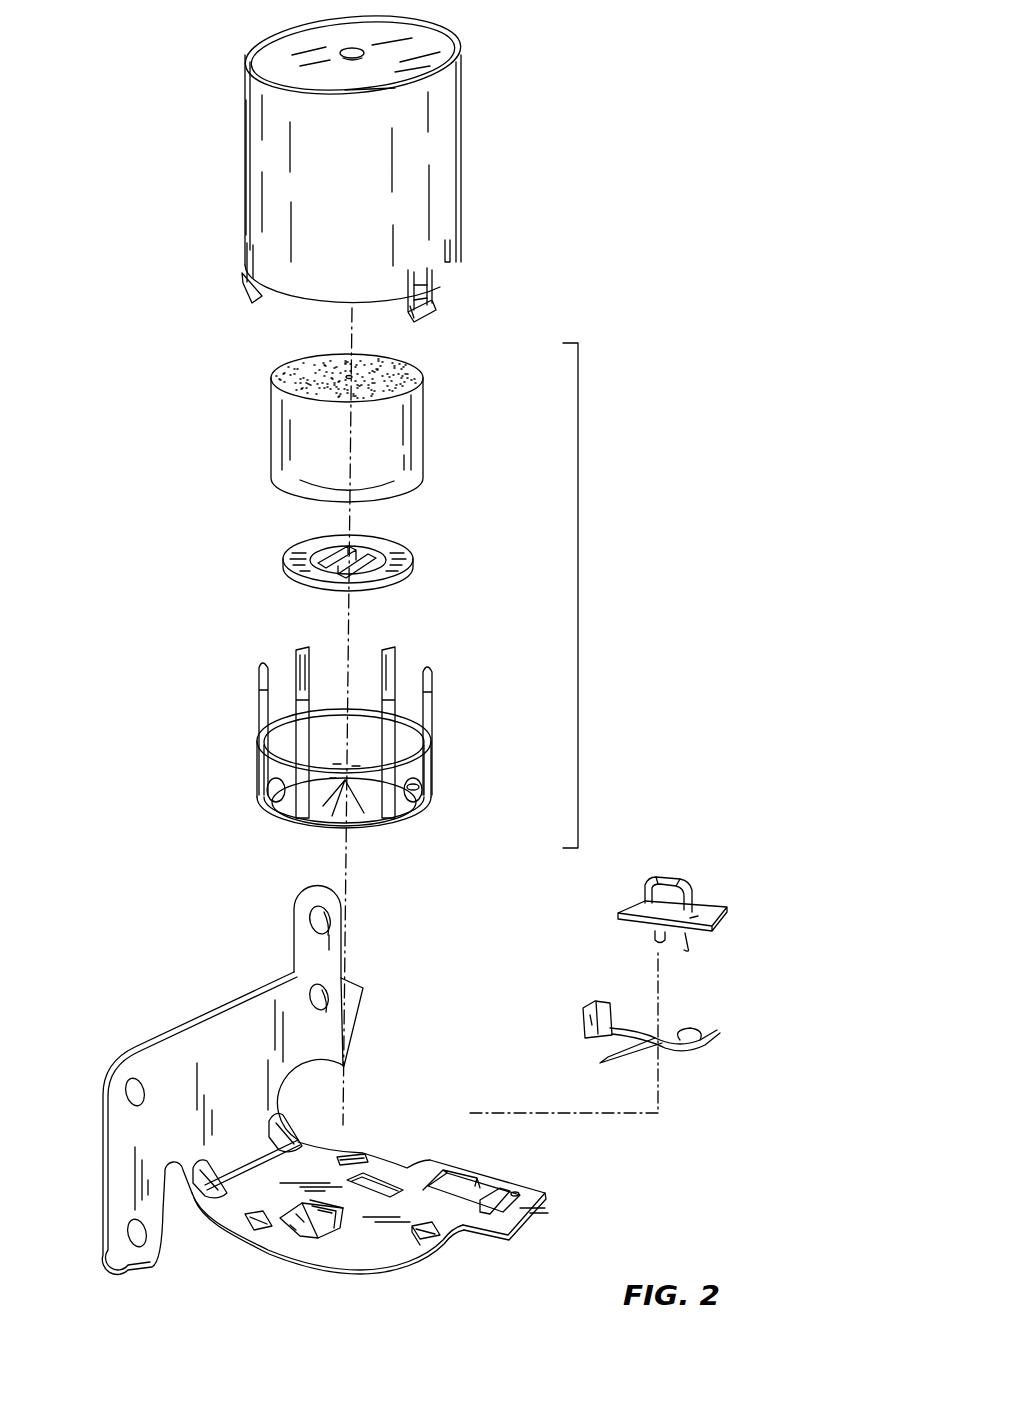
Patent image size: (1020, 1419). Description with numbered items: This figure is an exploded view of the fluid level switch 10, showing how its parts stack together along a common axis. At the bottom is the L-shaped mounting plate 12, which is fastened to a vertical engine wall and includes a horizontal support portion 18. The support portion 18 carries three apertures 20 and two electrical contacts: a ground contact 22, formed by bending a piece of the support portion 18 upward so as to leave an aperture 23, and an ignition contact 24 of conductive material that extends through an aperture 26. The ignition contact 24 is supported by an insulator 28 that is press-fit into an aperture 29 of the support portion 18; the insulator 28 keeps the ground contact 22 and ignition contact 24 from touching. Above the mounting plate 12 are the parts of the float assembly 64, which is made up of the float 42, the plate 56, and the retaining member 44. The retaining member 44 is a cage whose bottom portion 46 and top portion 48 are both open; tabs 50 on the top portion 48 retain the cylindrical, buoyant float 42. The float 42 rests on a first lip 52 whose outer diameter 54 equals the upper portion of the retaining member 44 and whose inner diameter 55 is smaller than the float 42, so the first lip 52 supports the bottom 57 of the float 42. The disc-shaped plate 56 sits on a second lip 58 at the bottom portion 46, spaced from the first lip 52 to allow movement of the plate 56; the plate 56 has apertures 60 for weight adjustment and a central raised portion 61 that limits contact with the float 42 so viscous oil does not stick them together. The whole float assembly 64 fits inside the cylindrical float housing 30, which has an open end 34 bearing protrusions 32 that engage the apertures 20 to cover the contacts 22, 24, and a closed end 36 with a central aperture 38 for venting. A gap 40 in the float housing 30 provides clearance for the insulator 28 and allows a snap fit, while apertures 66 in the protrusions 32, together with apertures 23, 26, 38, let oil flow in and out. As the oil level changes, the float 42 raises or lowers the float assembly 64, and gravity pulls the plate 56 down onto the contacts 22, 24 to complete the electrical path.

The fluid level switch 10 is at (736, 126).
The mounting plate 12 is at (224, 1044).
The support portion 18 is at (379, 1249).
The apertures 20 is at (348, 1154).
The ground contact 22 is at (303, 1232).
The aperture 23 is at (341, 1236).
The ignition contact 24 is at (595, 1005).
The aperture 26 is at (383, 1182).
The insulator 28 is at (705, 898).
The aperture 29 is at (488, 1177).
The float housing 30 is at (432, 167).
The protrusions 32 is at (250, 297).
The open end 34 is at (306, 304).
The closed end 36 is at (448, 57).
The aperture 38 is at (356, 49).
The gap 40 is at (449, 253).
The float 42 is at (404, 417).
The retaining member 44 is at (471, 731).
The bottom portion 46 is at (406, 836).
The top portion 48 is at (372, 630).
The tabs 50 is at (433, 681).
The first lip 52 is at (293, 373).
The outer diameter 54 is at (365, 807).
The inner diameter 55 is at (333, 813).
The plate 56 is at (413, 556).
The bottom 57 is at (391, 500).
The second lip 58 is at (268, 773).
The apertures 60 is at (340, 545).
The raised portion 61 is at (334, 570).
The float assembly 64 is at (579, 578).
The apertures 66 is at (415, 292).